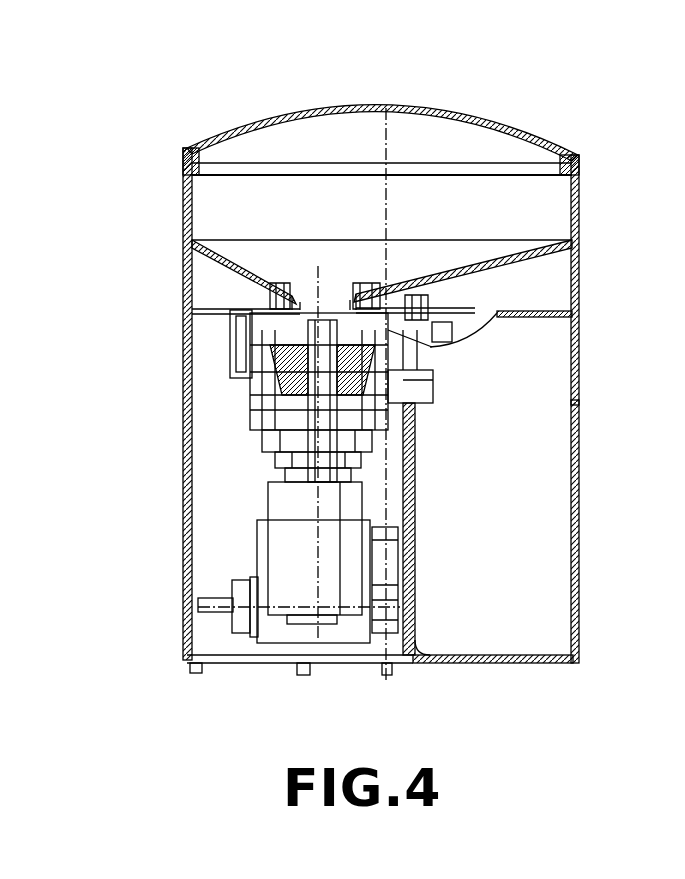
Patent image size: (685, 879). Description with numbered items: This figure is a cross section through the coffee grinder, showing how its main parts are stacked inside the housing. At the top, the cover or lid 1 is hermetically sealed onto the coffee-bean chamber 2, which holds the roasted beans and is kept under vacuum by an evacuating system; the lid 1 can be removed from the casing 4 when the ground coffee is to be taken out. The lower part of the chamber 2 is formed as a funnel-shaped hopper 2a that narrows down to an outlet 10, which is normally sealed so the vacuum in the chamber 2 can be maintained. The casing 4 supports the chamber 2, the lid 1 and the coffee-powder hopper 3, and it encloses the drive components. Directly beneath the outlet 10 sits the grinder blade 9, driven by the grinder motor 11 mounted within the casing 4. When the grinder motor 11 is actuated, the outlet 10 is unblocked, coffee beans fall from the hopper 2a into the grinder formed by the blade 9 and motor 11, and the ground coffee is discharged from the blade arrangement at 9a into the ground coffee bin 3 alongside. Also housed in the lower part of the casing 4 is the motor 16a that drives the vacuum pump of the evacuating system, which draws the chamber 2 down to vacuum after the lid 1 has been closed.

The cover or lid 1 is at (558, 150).
The coffee-bean chamber 2 is at (580, 213).
The funnel-shaped hopper 2a is at (228, 258).
The coffee-powder hopper 3 is at (578, 505).
The casing 4 is at (182, 402).
The grinder blade 9 is at (280, 360).
The blade arrangement discharge 9a is at (433, 385).
The outlet 10 is at (280, 297).
The grinder motor 11 is at (293, 503).
The vacuum pump motor 16a is at (272, 627).